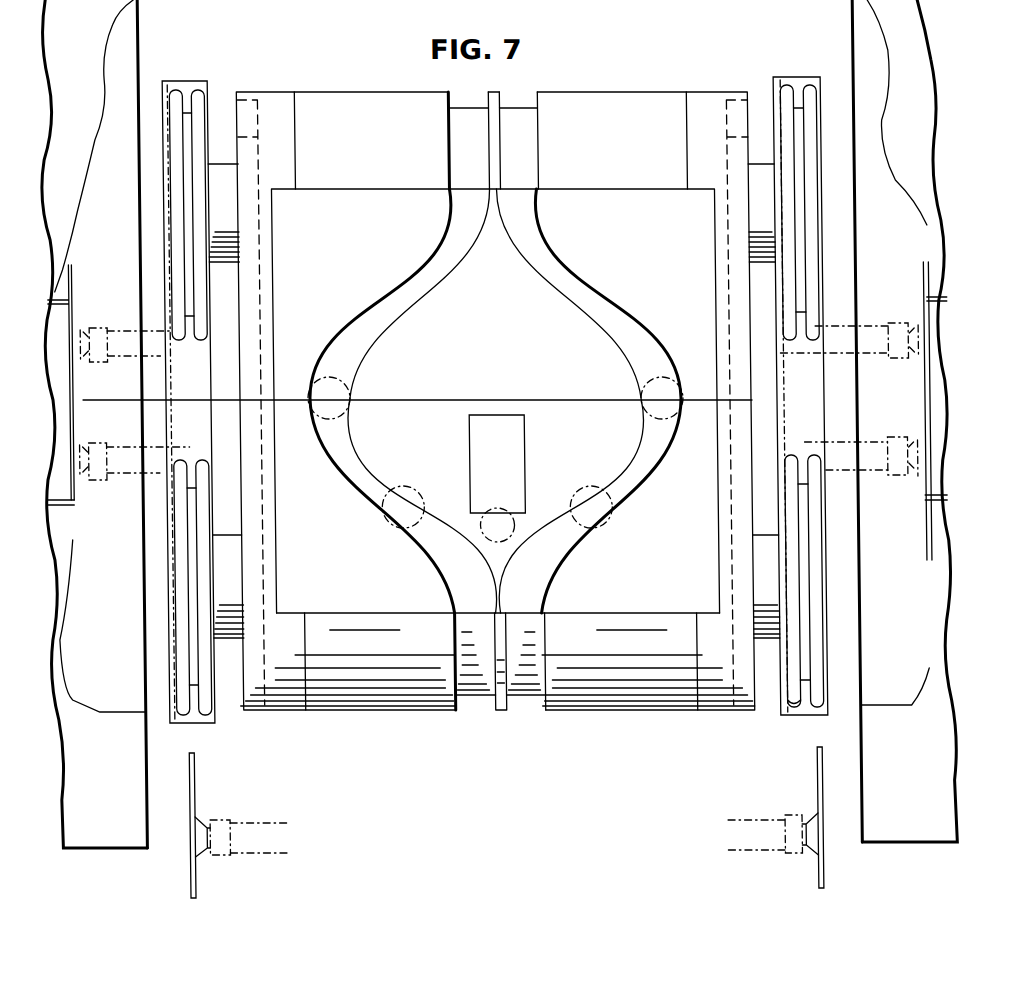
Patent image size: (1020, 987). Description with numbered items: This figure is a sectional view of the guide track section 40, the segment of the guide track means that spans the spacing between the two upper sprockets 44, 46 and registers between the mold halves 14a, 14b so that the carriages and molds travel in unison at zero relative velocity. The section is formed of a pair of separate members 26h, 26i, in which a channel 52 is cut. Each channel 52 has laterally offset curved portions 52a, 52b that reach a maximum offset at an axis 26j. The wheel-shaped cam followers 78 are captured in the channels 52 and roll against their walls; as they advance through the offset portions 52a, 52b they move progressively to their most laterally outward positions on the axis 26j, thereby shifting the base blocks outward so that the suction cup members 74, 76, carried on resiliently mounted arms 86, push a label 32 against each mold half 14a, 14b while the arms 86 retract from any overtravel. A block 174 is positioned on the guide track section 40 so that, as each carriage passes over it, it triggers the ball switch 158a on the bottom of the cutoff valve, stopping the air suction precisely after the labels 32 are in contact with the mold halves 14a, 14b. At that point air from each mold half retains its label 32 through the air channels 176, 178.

The guide track section 40 is at (337, 91).
The channel 52 is at (453, 146).
The laterally offset curved channel portion 52a is at (601, 292).
The laterally offset curved channel portion 52b is at (384, 296).
The separate member of guide track means 26i is at (634, 196).
The separate member of guide track means 26h is at (630, 605).
The axis 26j is at (434, 401).
The cam follower 78 is at (326, 418).
The block 174 is at (517, 440).
The ball switch 158a is at (511, 520).
The upper sprocket 46 is at (787, 87).
The upper sprocket 44 is at (793, 702).
The mold half 14a is at (124, 787).
The mold half 14b is at (936, 799).
The air channel 176 is at (54, 297).
The label 32 is at (74, 391).
The air channel 178 is at (47, 507).
The arm 86 is at (121, 328).
The suction cup member 76 is at (79, 328).
The suction cup device 74 is at (84, 450).